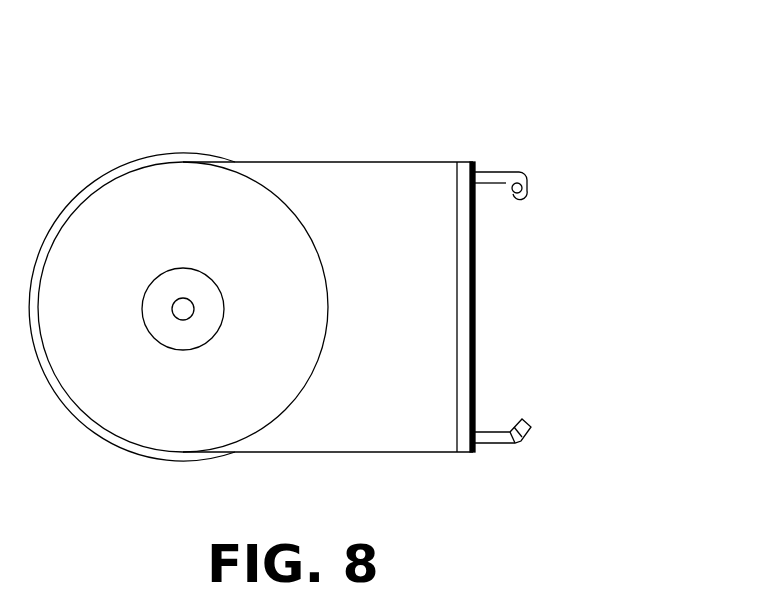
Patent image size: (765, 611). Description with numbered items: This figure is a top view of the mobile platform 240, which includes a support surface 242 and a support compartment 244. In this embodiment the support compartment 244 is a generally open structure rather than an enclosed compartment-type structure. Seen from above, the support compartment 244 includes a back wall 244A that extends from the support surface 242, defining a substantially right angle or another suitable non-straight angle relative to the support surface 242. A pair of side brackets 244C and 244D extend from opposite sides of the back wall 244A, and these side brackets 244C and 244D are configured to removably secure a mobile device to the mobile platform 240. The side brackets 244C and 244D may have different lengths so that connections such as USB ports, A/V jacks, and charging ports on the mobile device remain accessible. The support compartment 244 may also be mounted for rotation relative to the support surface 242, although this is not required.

The mobile platform 240 is at (607, 58).
The support surface 242 is at (133, 200).
The support compartment 244 is at (583, 285).
The back wall 244A is at (462, 342).
The side bracket 244C is at (495, 434).
The side bracket 244D is at (492, 185).